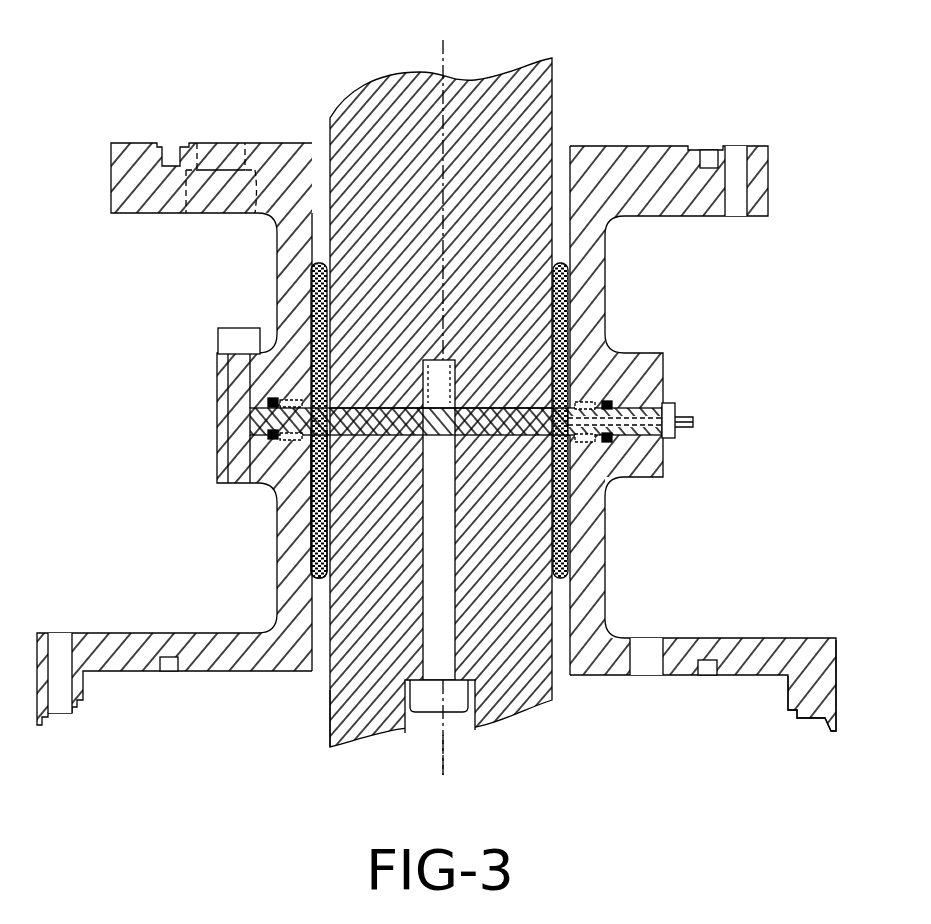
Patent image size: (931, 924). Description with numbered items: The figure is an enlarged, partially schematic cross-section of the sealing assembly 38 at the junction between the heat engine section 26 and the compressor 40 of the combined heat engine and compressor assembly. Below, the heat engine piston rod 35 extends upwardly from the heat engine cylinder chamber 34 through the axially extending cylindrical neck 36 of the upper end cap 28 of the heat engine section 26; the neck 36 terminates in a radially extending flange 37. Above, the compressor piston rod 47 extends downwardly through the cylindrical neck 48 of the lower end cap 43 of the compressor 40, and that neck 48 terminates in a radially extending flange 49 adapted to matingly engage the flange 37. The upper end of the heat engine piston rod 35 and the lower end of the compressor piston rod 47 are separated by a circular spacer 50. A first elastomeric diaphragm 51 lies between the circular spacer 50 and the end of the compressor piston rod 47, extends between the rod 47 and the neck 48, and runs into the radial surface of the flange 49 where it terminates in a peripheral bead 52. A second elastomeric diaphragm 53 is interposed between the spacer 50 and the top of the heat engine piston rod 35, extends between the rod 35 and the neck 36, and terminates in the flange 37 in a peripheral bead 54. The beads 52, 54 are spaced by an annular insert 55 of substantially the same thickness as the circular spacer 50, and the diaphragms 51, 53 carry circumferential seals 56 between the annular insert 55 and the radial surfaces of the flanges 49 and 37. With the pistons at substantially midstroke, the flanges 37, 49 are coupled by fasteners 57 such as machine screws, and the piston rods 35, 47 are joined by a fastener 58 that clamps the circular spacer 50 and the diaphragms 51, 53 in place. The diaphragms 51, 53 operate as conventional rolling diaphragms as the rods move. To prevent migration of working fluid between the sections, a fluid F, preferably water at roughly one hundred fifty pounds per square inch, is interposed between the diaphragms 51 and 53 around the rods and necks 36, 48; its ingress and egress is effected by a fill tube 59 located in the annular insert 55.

The heat engine section 26 is at (751, 638).
The upper end cap 28 is at (812, 665).
The heat engine cylinder chamber 34 is at (644, 733).
The heat engine piston rod 35 is at (355, 712).
The cylindrical neck 36 is at (290, 587).
The flange 37 is at (630, 487).
The sealing assembly 38 is at (141, 392).
The compressor 40 is at (111, 145).
The lower end cap 43 is at (165, 188).
The compressor piston rod 47 is at (483, 115).
The cylindrical neck 48 is at (595, 283).
The flange 49 is at (634, 360).
The circular spacer 50 is at (312, 470).
The first elastomeric diaphragm 51 is at (495, 405).
The peripheral bead 52 is at (295, 403).
The second elastomeric diaphragm 53 is at (312, 548).
The peripheral bead 54 is at (295, 441).
The annular insert 55 is at (262, 420).
The circumferential seals 56 is at (270, 402).
The fasteners 57 is at (245, 333).
The fastener 58 is at (440, 700).
The fill tube 59 is at (692, 421).
The fluid F is at (565, 265).